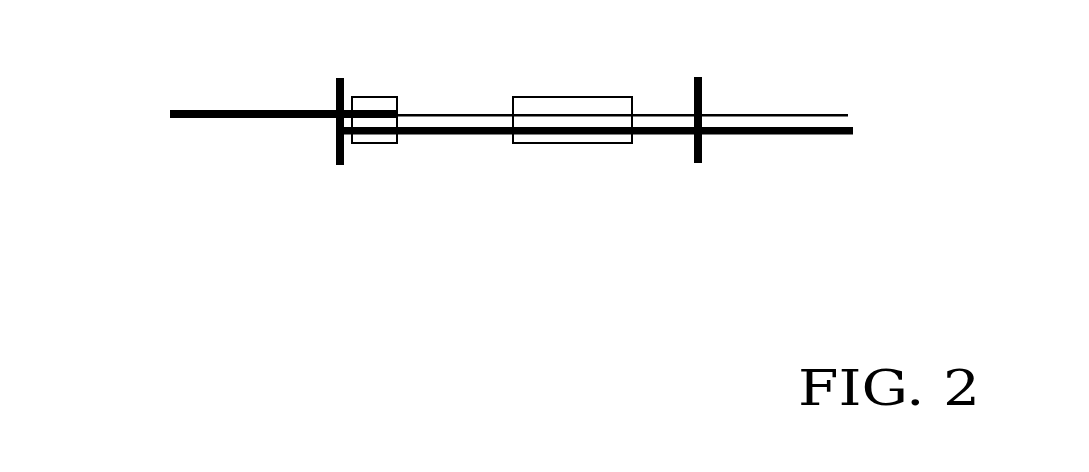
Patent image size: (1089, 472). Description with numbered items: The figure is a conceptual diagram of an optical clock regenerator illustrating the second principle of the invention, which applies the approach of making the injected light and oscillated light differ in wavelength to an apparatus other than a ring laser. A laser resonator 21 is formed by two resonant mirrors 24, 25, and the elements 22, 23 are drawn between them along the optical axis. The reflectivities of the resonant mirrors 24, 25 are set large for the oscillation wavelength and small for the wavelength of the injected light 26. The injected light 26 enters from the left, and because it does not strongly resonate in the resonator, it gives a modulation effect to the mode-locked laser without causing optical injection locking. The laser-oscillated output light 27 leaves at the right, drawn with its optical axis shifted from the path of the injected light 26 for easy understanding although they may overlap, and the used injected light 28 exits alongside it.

The laser resonator 21 is at (720, 74).
The laser medium 22 is at (381, 143).
The wavelength conversion element 23 is at (568, 143).
The resonant mirror 24 is at (337, 157).
The resonant mirror 25 is at (697, 163).
The injected light 26 is at (236, 98).
The laser-oscillated output light 27 is at (815, 145).
The used injected light (λ1) 28 is at (815, 98).